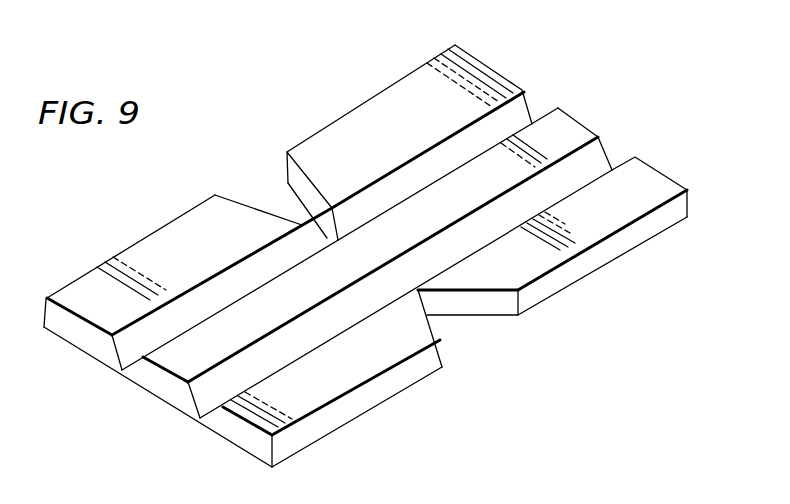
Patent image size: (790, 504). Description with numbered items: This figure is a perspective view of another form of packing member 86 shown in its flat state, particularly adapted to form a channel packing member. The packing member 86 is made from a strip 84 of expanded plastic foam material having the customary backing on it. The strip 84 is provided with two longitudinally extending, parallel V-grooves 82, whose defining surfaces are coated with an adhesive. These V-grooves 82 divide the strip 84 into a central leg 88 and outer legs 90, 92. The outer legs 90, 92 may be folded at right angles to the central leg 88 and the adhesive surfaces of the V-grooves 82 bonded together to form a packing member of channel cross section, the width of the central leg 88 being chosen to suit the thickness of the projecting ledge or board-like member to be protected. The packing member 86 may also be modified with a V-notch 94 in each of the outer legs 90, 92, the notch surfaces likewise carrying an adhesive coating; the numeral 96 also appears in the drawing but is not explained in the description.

The board 82 is at (207, 292).
The first board 84 is at (90, 282).
The stacked board assembly 86 is at (552, 86).
The second board 88 is at (165, 388).
The end face of first board 90 is at (78, 338).
The third board 92 is at (247, 440).
The notch 94 is at (255, 190).
The base 96 is at (388, 501).